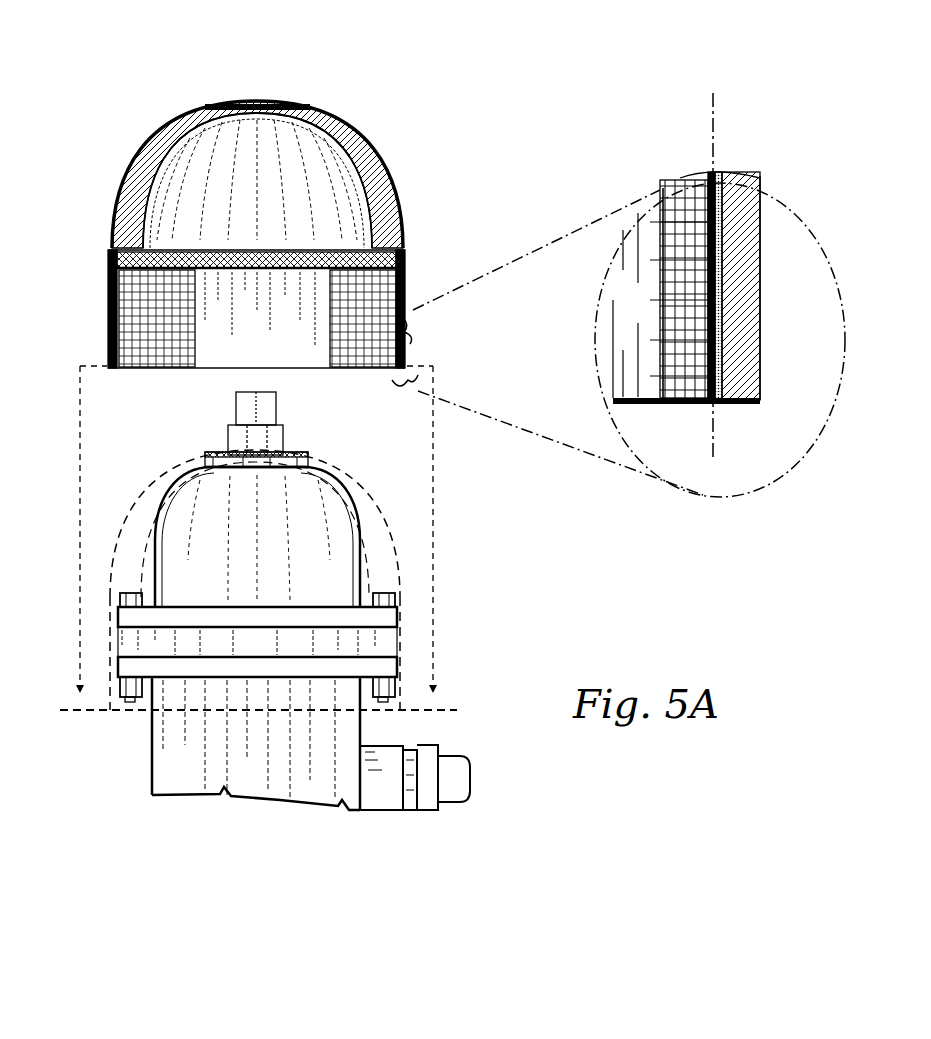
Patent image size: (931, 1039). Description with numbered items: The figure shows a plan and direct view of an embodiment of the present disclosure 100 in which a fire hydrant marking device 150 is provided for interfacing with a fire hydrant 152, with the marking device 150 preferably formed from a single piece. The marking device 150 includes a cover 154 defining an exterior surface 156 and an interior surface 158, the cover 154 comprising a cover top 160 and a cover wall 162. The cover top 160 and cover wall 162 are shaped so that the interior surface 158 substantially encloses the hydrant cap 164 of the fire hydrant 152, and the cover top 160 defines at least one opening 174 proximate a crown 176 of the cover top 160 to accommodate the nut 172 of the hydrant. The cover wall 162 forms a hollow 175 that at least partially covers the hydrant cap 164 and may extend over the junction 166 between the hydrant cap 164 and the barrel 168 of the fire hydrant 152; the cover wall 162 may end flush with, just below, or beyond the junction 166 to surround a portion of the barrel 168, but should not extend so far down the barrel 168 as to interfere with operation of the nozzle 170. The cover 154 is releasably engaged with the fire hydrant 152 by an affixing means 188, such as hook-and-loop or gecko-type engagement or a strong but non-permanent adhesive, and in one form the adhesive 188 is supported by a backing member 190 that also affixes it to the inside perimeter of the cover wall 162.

The lighting assembly 100 is at (444, 95).
The fire hydrant marking device 150 is at (224, 195).
The fire hydrant 152 is at (210, 755).
The cover 154 is at (183, 110).
The exterior surface 156 is at (110, 345).
The interior surface 158 is at (130, 218).
The cover top 160 is at (205, 452).
The cover wall 162 is at (125, 548).
The hydrant cap 164 is at (332, 537).
The junction 166 is at (110, 638).
The barrel 168 is at (150, 742).
The nozzle 170 is at (380, 790).
The nut 172 is at (276, 395).
The opening 174 is at (254, 100).
The hollow 175 is at (680, 205).
The crown 176 is at (348, 128).
The affixing means 188 is at (715, 405).
The backing member 190 is at (408, 387).